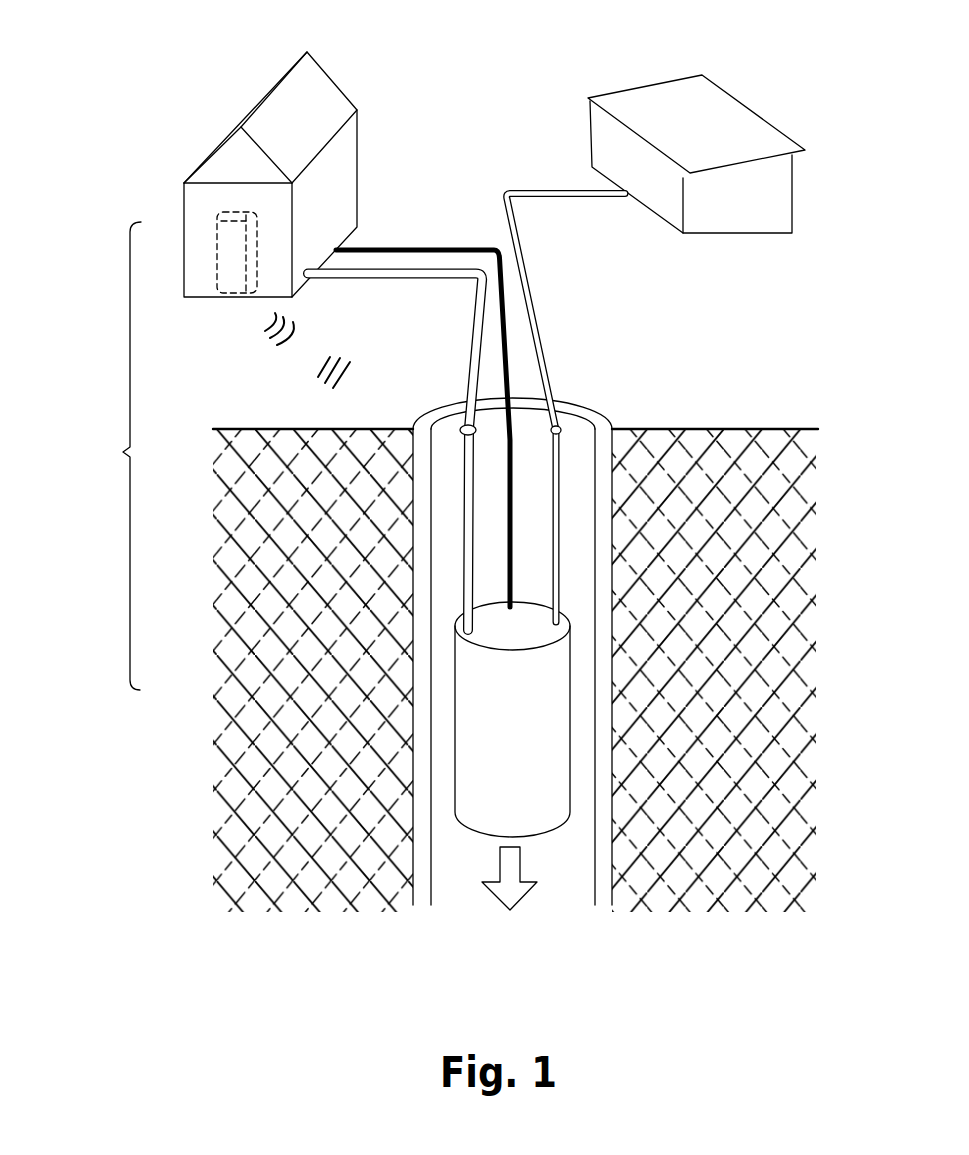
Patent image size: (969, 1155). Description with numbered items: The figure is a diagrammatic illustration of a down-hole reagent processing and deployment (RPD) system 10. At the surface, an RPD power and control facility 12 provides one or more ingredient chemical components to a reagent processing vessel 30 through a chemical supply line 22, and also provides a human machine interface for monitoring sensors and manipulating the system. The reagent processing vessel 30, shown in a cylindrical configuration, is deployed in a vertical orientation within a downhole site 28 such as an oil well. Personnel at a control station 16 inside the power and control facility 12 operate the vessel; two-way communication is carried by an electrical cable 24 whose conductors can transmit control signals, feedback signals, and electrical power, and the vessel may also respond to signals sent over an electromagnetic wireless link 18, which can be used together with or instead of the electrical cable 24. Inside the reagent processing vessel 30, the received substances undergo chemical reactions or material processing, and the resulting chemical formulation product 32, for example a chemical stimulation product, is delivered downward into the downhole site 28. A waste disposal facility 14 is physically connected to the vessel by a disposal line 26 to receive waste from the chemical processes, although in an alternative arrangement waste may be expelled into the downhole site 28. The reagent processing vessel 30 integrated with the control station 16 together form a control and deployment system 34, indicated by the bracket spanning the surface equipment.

The down-hole reagent processing and deployment (RPD) system 10 is at (516, 59).
The RPD power and control facility 12 is at (209, 149).
The waste disposal facility 14 is at (753, 108).
The control station 16 is at (232, 283).
The electromagnetic (EM) wireless link 18 is at (301, 384).
The chemical supply line 22 is at (462, 323).
The electrical cable 24 is at (407, 244).
The conduit / cable from power supply 26 is at (547, 352).
The downhole site 28 is at (601, 413).
The reagent processing vessel 30 is at (521, 781).
The chemical formulation product 32 is at (494, 905).
The control and deployment system 34 is at (114, 456).